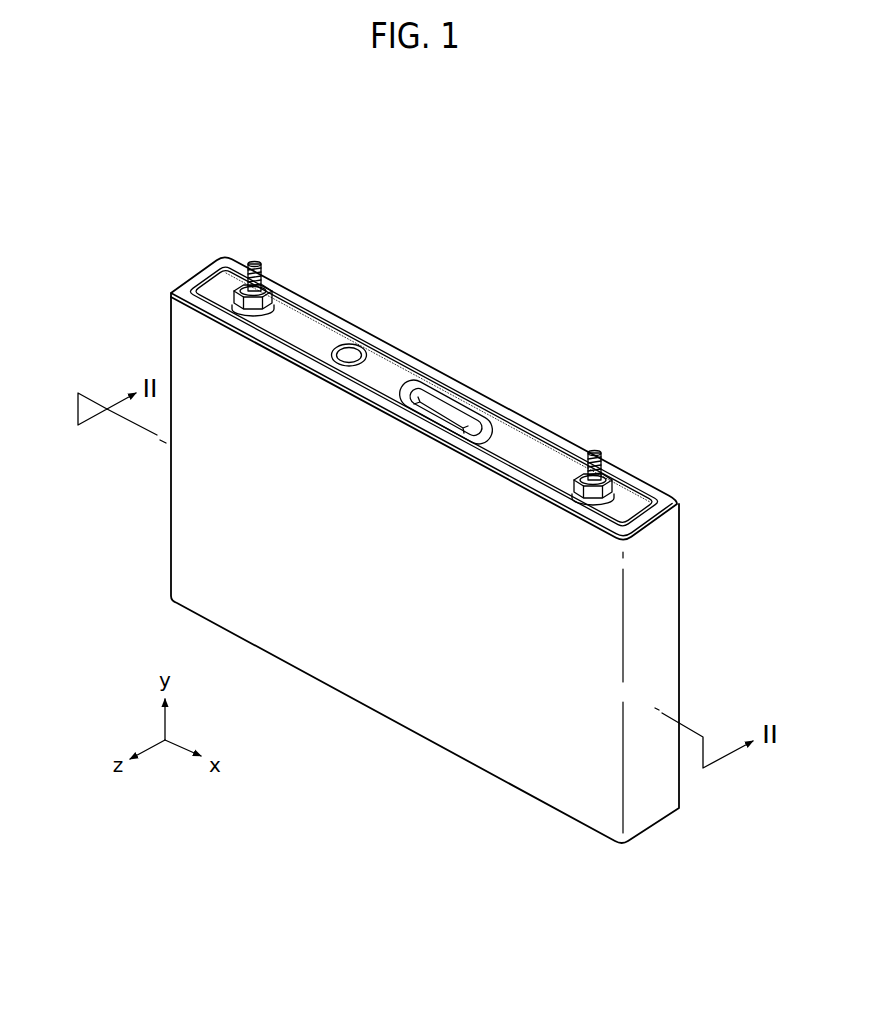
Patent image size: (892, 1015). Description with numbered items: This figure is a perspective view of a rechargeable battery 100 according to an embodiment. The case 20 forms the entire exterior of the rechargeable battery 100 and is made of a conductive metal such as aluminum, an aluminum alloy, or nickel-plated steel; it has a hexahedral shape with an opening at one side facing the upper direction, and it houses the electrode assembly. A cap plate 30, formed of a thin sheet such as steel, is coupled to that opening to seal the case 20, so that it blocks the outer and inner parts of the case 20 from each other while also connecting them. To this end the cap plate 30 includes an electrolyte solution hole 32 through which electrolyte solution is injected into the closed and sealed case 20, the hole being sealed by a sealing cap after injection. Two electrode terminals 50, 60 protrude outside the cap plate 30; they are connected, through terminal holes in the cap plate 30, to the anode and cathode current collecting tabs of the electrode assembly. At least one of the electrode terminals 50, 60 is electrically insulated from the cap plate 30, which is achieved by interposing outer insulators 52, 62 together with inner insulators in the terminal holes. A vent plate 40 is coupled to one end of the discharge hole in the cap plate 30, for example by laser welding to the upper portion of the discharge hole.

The rechargeable battery 100 is at (432, 210).
The case 20 is at (412, 698).
The cap plate 30 is at (651, 527).
The electrolyte solution hole 32 is at (349, 353).
The vent plate 40 is at (450, 401).
The electrode terminal 50 is at (277, 255).
The outer insulator 52 is at (276, 311).
The electrode terminal 60 is at (642, 443).
The outer insulator 62 is at (616, 505).